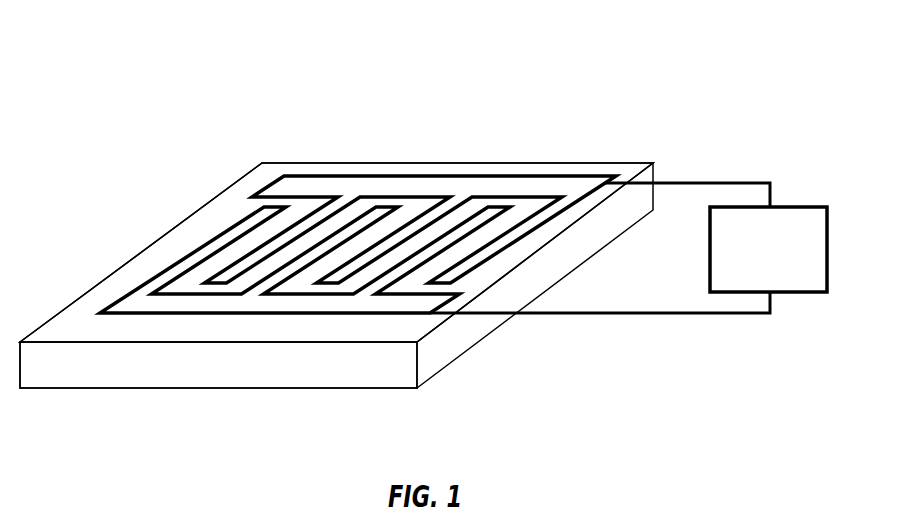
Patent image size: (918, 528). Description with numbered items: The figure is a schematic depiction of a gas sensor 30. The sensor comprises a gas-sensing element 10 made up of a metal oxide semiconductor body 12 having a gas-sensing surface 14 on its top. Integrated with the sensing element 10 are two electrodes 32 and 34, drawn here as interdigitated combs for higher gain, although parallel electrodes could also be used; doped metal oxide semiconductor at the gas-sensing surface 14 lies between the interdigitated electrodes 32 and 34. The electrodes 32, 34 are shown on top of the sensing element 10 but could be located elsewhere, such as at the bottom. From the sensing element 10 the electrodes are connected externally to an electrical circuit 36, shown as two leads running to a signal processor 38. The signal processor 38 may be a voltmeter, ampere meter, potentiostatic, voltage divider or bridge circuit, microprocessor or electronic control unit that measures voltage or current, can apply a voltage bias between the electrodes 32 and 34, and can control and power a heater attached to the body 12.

The gas-sensing element 10 is at (85, 291).
The metal oxide semiconductor body 12 is at (241, 372).
The gas-sensing surface 14 is at (182, 243).
The gas sensor 30 is at (724, 62).
The electrode 32 is at (565, 175).
The electrode 34 is at (422, 317).
The electrical circuit 36 is at (722, 182).
The signal processor 38 is at (829, 244).